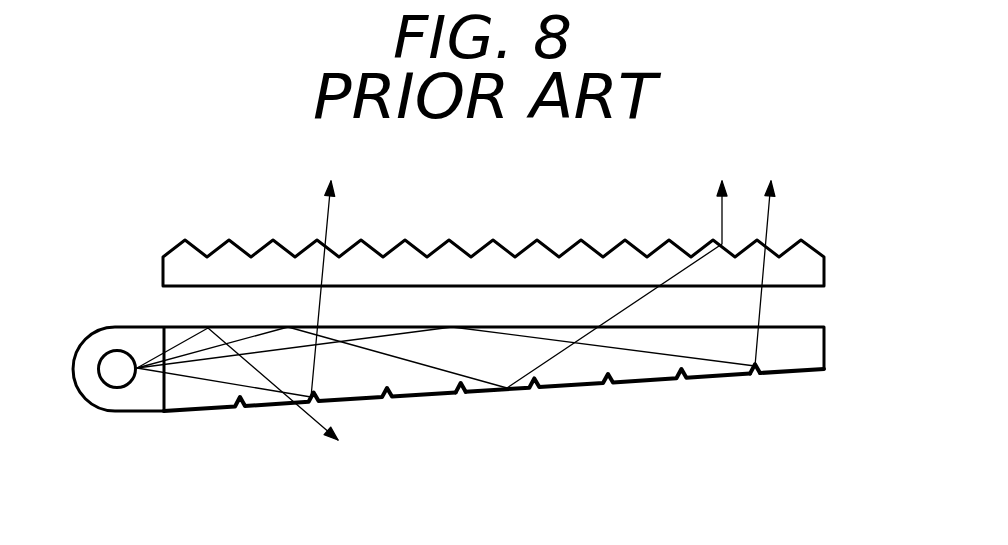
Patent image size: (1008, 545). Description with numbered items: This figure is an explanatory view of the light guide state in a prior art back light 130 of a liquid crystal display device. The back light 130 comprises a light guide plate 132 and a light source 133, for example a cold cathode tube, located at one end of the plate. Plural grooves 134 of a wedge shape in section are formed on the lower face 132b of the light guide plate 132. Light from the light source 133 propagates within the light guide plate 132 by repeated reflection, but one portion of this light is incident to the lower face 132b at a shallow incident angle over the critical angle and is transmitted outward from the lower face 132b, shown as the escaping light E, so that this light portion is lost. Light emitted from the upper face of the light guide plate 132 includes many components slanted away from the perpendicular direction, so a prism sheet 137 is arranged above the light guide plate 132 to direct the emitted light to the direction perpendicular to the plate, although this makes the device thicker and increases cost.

The back light 130 is at (148, 320).
The light guide plate 132 is at (812, 348).
The lower face of the light guide plate 132b is at (632, 388).
The light source 133 is at (117, 375).
The grooves 134 is at (462, 395).
The prism sheet 137 is at (810, 263).
The light leaking out of light guide plate E is at (247, 398).